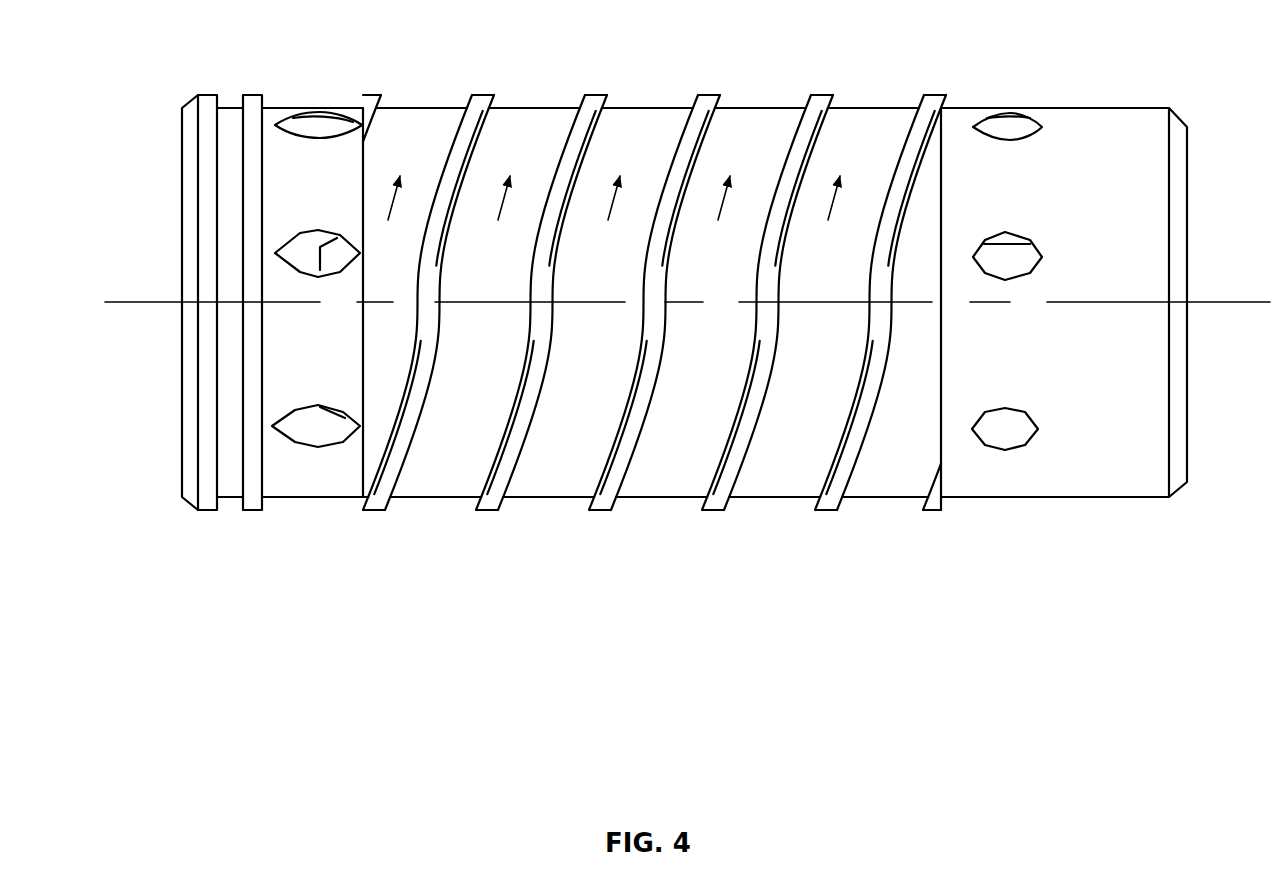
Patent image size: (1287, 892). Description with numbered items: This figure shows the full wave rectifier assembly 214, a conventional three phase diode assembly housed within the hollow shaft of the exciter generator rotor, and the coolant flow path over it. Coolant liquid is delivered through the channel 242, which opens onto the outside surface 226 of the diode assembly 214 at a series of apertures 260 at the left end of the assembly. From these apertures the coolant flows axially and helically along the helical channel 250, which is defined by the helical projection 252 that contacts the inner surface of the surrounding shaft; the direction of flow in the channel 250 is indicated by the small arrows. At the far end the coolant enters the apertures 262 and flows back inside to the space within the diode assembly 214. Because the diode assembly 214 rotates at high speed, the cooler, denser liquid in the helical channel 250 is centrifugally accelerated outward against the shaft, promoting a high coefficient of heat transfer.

The fullwave rectifier assembly 214 is at (678, 541).
The outside surface 226 is at (435, 108).
The channel 242 is at (320, 112).
The helical channel 250 is at (548, 156).
The helical projection 252 is at (485, 95).
The apertures 260 is at (320, 138).
The apertures 262 is at (1005, 108).